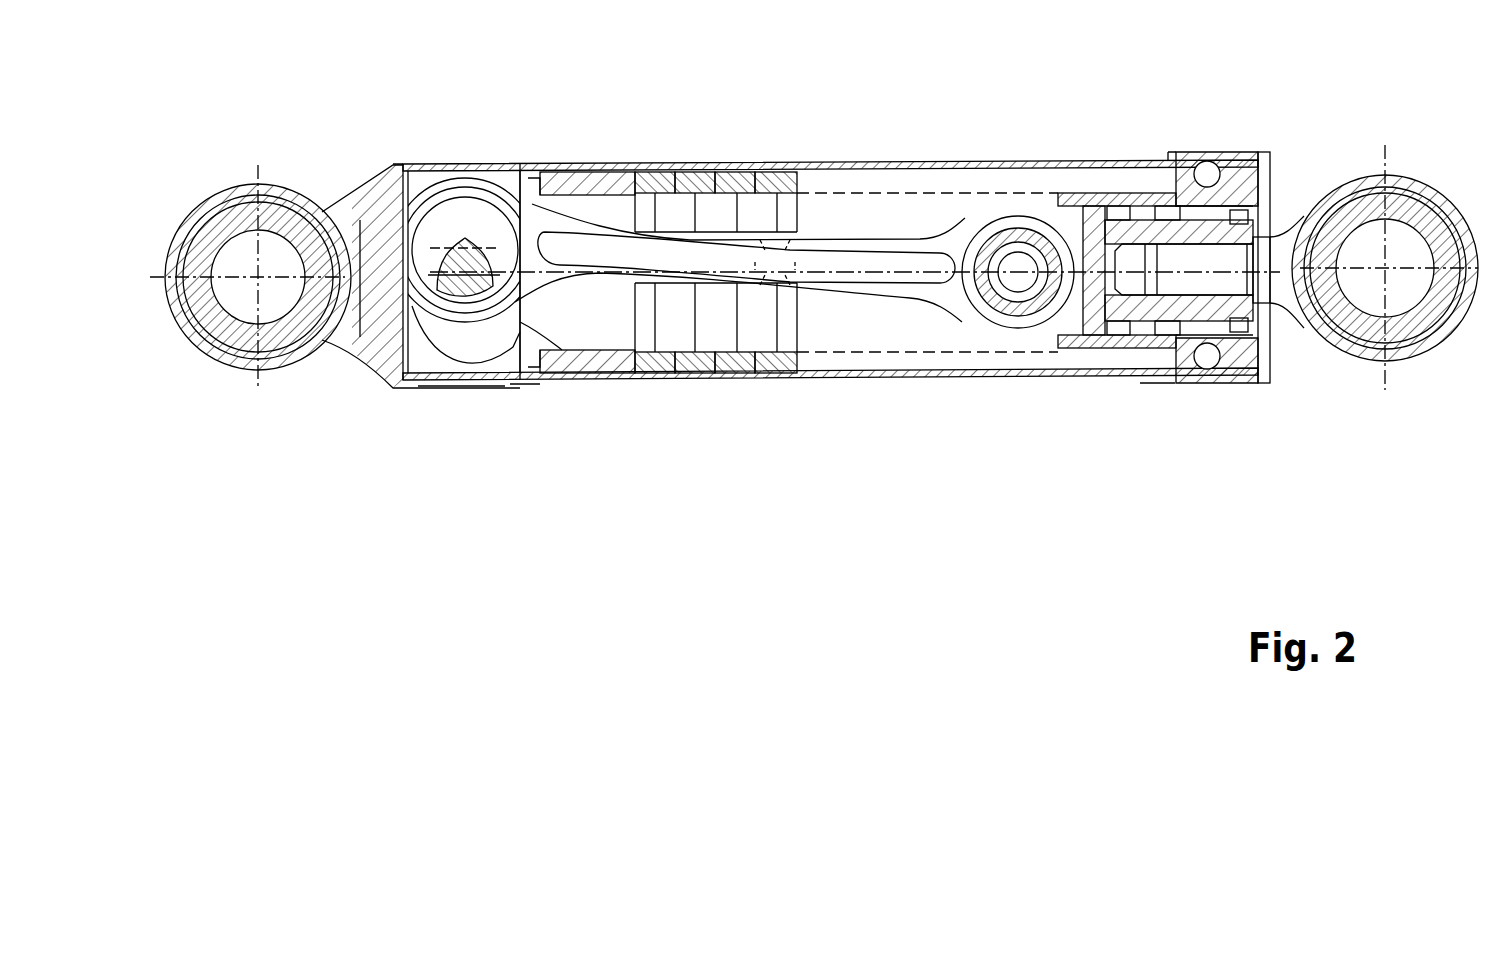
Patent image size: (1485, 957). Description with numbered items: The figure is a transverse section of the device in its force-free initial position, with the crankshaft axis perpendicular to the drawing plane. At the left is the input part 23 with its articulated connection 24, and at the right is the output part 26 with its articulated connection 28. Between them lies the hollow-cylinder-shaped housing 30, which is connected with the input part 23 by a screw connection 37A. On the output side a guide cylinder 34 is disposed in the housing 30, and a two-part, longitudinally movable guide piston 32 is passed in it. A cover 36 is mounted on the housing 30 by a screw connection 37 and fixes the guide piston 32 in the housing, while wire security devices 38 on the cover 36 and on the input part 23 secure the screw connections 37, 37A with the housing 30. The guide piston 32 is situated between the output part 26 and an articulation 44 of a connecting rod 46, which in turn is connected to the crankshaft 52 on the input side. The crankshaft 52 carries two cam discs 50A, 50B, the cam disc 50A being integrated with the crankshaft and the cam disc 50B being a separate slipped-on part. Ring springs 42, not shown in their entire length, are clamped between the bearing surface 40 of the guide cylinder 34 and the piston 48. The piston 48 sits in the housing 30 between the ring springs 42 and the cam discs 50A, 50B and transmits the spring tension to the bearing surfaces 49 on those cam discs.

The input part 23 is at (365, 345).
The articulated connection 24 is at (210, 353).
The output part 26 is at (1267, 292).
The articulated connection 28 is at (1376, 355).
The housing 30 is at (830, 165).
The guide piston 32 is at (1215, 195).
The guide cylinder 34 is at (1088, 200).
The cover 36 is at (1272, 185).
The screw connection 37 is at (1198, 160).
The screw connection 37A is at (440, 165).
The wire security devices 38 is at (520, 390).
The bearing surface 40 is at (1160, 180).
The ring springs 42 is at (770, 167).
The articulation 44 is at (1020, 213).
The connecting rod 46 is at (863, 245).
The piston 48 is at (560, 167).
The bearing surfaces 49 is at (565, 345).
The cam disc 50A is at (453, 337).
The cam disc 50B is at (445, 354).
The crankshaft 52 is at (468, 278).